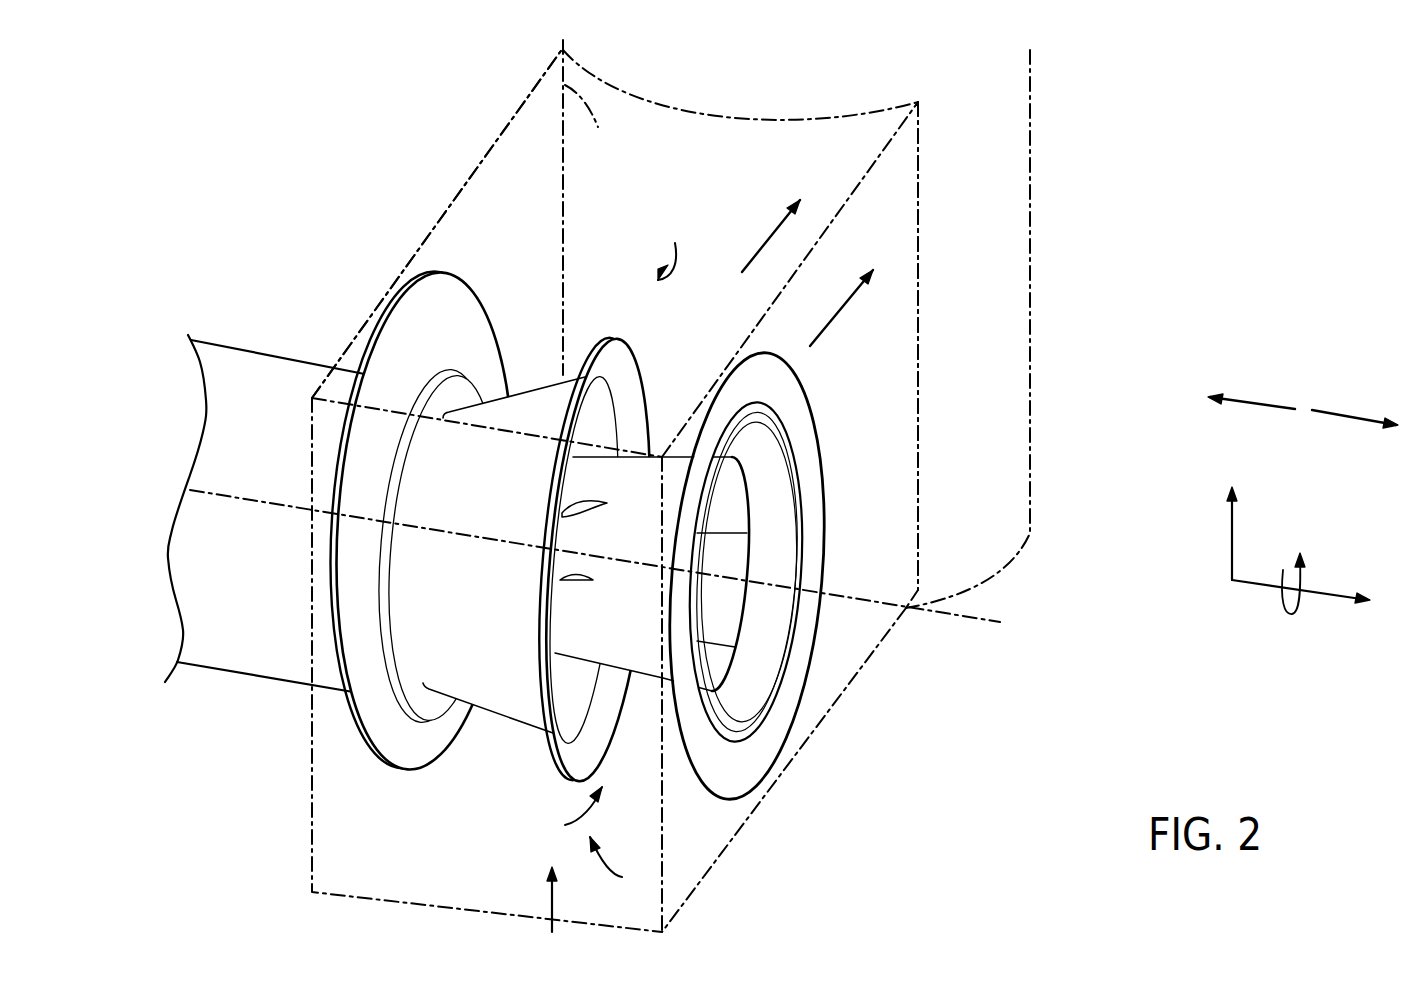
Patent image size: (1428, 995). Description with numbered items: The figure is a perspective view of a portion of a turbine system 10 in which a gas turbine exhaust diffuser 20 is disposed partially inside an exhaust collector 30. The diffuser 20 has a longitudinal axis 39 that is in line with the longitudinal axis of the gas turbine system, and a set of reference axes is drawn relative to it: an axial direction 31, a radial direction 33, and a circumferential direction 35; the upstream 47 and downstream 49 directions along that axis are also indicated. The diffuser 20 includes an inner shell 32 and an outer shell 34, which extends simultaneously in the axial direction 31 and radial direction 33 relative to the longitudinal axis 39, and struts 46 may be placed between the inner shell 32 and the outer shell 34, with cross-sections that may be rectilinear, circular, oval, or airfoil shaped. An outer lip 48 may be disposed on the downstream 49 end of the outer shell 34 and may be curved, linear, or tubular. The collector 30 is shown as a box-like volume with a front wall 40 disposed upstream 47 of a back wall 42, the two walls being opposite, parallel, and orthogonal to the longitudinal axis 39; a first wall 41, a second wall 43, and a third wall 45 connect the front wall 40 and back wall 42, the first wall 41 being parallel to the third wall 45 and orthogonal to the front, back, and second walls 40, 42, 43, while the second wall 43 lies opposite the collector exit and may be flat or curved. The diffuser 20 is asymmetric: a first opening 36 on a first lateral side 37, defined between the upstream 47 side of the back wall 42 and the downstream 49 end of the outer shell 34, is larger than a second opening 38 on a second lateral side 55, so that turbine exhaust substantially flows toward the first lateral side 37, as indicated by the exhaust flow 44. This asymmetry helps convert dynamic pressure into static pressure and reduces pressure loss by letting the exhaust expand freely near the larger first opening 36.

The turbine system 10 is at (323, 262).
The gas turbine exhaust diffuser 20 is at (551, 915).
The exhaust collector 30 is at (905, 648).
The axial direction 31 is at (1320, 597).
The inner shell 32 is at (635, 638).
The radial direction 33 is at (1232, 537).
The outer shell 34 is at (482, 695).
The circumferential direction 35 is at (1277, 597).
The first opening 36 is at (673, 372).
The first lateral side 37 is at (672, 243).
The second opening 38 is at (567, 815).
The longitudinal axis 39 is at (958, 620).
The front wall 40 is at (465, 220).
The first wall 41 is at (563, 50).
The back wall 42 is at (903, 390).
The second wall 43 is at (325, 782).
The exhaust flow 44 is at (757, 250).
The third wall 45 is at (717, 827).
The struts 46 is at (607, 503).
The upstream 47 is at (1262, 398).
The outer lip 48 is at (565, 473).
The downstream 49 is at (1347, 413).
The second lateral side 55 is at (621, 867).